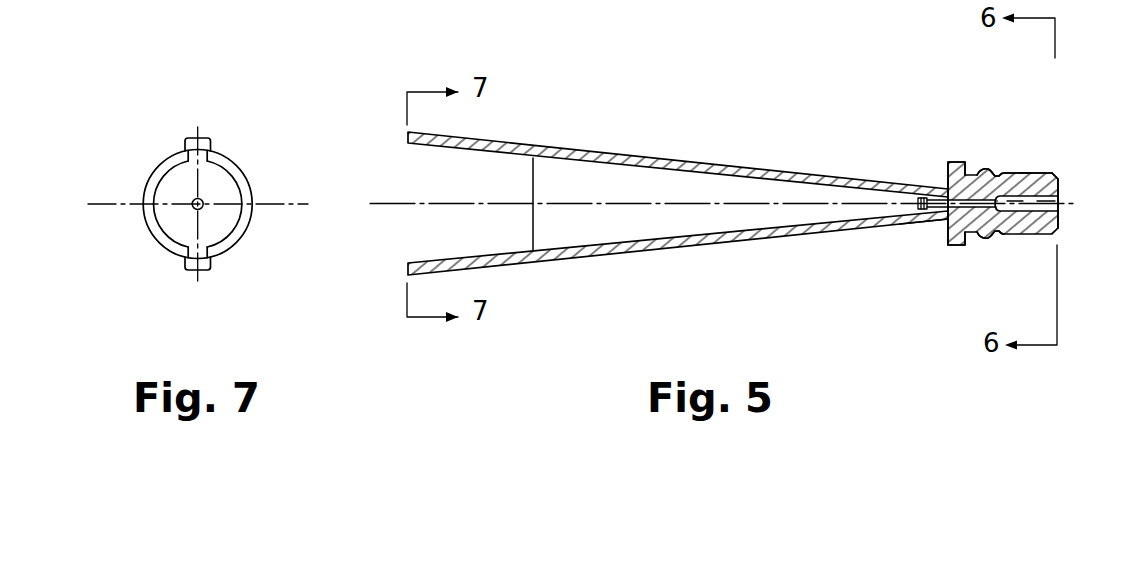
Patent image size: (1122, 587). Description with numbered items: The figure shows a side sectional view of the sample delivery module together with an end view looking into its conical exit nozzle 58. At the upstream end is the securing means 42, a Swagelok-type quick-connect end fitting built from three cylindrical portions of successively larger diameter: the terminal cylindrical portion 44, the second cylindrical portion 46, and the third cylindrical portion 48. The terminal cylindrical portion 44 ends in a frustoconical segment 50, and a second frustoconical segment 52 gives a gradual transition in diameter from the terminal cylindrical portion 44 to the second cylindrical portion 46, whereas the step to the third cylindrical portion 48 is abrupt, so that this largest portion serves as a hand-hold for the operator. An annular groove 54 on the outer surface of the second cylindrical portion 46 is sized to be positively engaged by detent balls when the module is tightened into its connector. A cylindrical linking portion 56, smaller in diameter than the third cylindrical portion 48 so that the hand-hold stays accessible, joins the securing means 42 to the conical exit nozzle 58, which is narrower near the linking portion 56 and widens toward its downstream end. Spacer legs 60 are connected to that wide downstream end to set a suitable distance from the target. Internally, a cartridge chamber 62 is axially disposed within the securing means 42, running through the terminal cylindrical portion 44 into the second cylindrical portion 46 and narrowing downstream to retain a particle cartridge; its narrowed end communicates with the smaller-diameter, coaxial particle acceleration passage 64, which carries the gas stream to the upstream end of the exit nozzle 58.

In FIG. 5, the securing means 42 is at (1055, 97).
In FIG. 5, the terminal cylindrical portion 44 is at (1032, 175).
In FIG. 5, the second cylindrical portion 46 is at (1003, 173).
In FIG. 5, the third cylindrical portion 48 is at (958, 245).
In FIG. 5, the frustoconical segment 50 is at (1047, 175).
In FIG. 5, the second frustoconical segment 52 is at (1017, 172).
In FIG. 5, the annular groove 54 is at (987, 230).
In FIG. 5, the linking portion 56 is at (913, 222).
In FIG. 7, the conical exit nozzle 58 is at (156, 177).
In FIG. 5, the conical exit nozzle 58 is at (608, 153).
In FIG. 7, the spacer legs 60 is at (202, 140).
In FIG. 5, the spacer legs 60 is at (523, 148).
In FIG. 5, the cartridge chamber 62 is at (1057, 210).
In FIG. 7, the particle acceleration passage 64 is at (201, 200).
In FIG. 5, the particle acceleration passage 64 is at (933, 199).